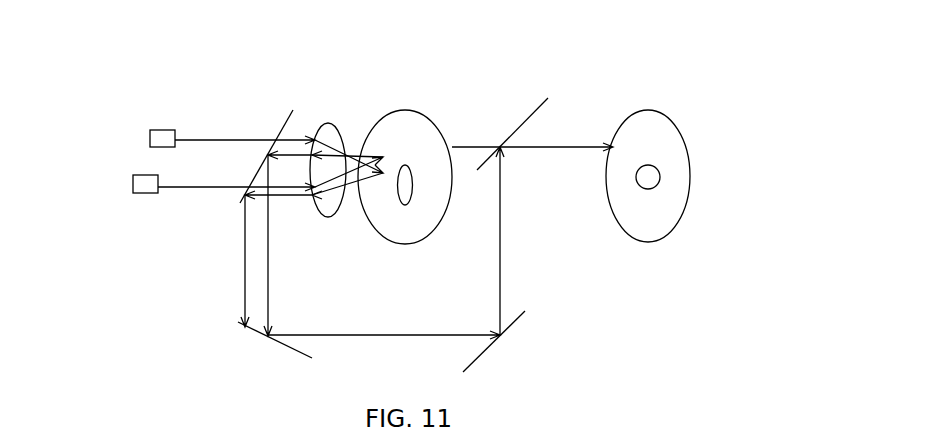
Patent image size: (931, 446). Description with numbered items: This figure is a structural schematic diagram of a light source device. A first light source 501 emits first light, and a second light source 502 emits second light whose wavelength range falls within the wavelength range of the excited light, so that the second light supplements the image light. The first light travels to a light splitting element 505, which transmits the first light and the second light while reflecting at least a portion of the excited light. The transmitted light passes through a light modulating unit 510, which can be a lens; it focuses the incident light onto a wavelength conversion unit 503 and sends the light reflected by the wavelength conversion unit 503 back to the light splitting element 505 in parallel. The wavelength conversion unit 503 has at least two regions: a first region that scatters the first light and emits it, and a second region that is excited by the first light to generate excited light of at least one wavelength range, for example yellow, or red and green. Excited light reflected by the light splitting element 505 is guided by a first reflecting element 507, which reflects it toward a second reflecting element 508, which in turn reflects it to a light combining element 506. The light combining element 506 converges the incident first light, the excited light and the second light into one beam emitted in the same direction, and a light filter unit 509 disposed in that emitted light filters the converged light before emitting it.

The first light source 501 is at (133, 178).
The second light source 502 is at (150, 139).
The wavelength conversion unit 503 is at (403, 110).
The light splitting element 505 is at (286, 125).
The light combining element 506 is at (537, 103).
The first reflecting element 507 is at (238, 323).
The second reflecting element 508 is at (513, 322).
The light filter unit 509 is at (663, 237).
The light modulating unit 510 is at (328, 123).